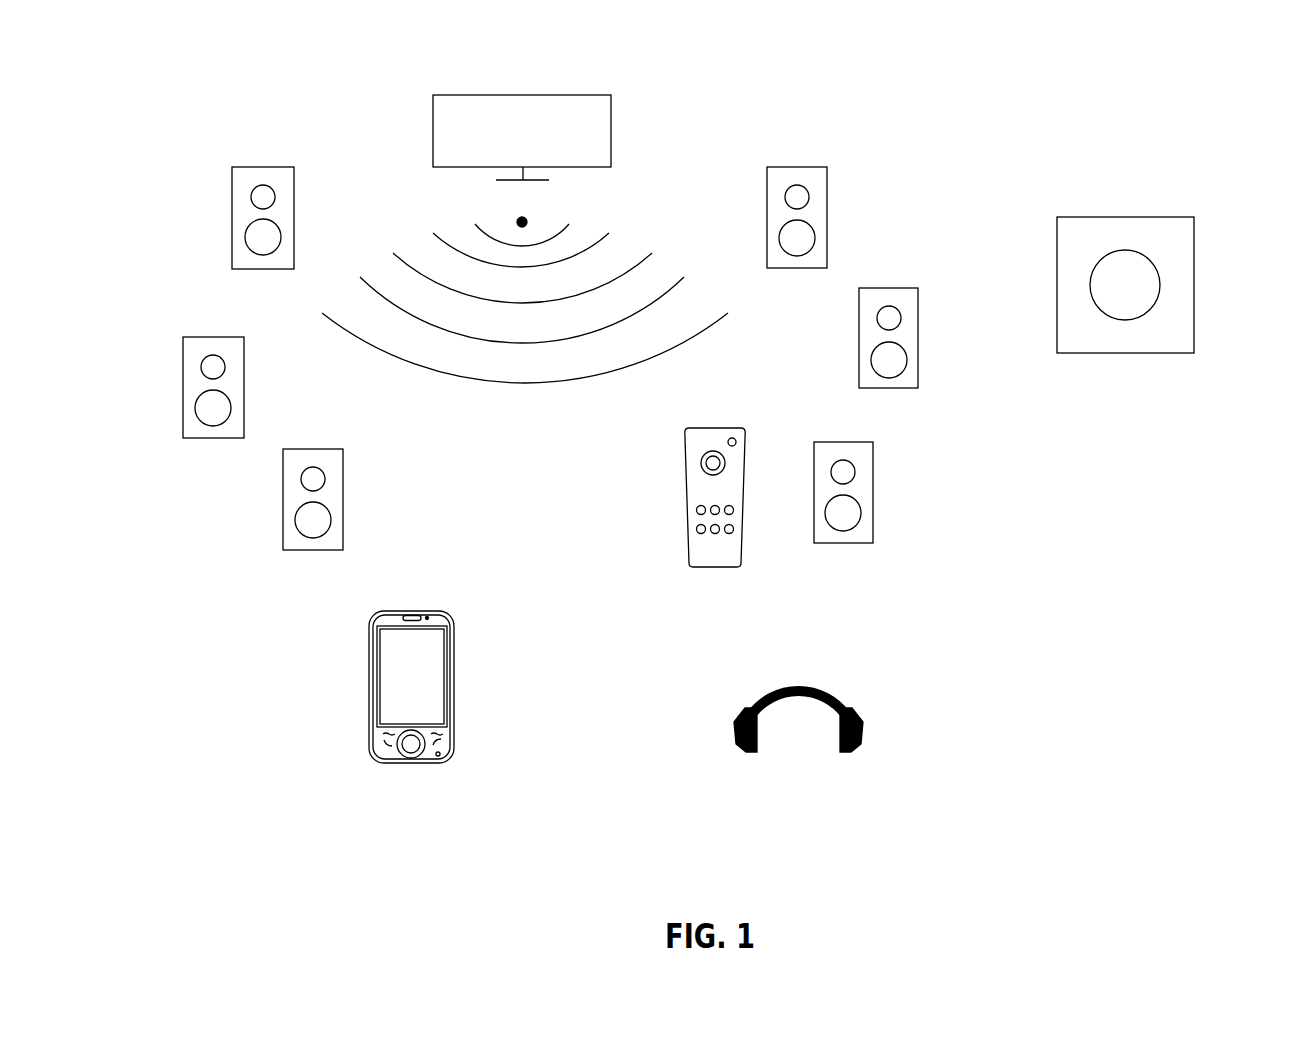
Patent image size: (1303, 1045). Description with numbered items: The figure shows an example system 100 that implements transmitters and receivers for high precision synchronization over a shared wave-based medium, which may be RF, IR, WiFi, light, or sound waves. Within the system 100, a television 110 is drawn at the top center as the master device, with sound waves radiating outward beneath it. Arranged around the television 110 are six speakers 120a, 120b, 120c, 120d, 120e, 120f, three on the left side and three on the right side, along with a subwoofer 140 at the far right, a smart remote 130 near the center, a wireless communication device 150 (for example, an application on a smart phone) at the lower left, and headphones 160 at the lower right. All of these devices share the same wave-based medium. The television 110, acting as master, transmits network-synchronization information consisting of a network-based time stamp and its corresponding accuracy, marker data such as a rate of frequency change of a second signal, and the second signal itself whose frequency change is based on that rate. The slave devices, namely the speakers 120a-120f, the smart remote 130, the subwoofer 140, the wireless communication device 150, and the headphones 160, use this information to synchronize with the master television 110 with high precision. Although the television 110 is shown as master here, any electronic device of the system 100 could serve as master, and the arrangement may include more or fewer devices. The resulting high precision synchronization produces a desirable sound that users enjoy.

The system 100 is at (808, 205).
The television 110 is at (611, 128).
The speaker 120a is at (294, 207).
The speaker 120b is at (244, 379).
The speaker 120c is at (343, 491).
The speaker 120d is at (827, 210).
The speaker 120e is at (918, 332).
The speaker 120f is at (873, 485).
The smart remote 130 is at (685, 479).
The subwoofer 140 is at (1194, 263).
The wireless communication device 150 is at (454, 680).
The headphones 160 is at (863, 732).